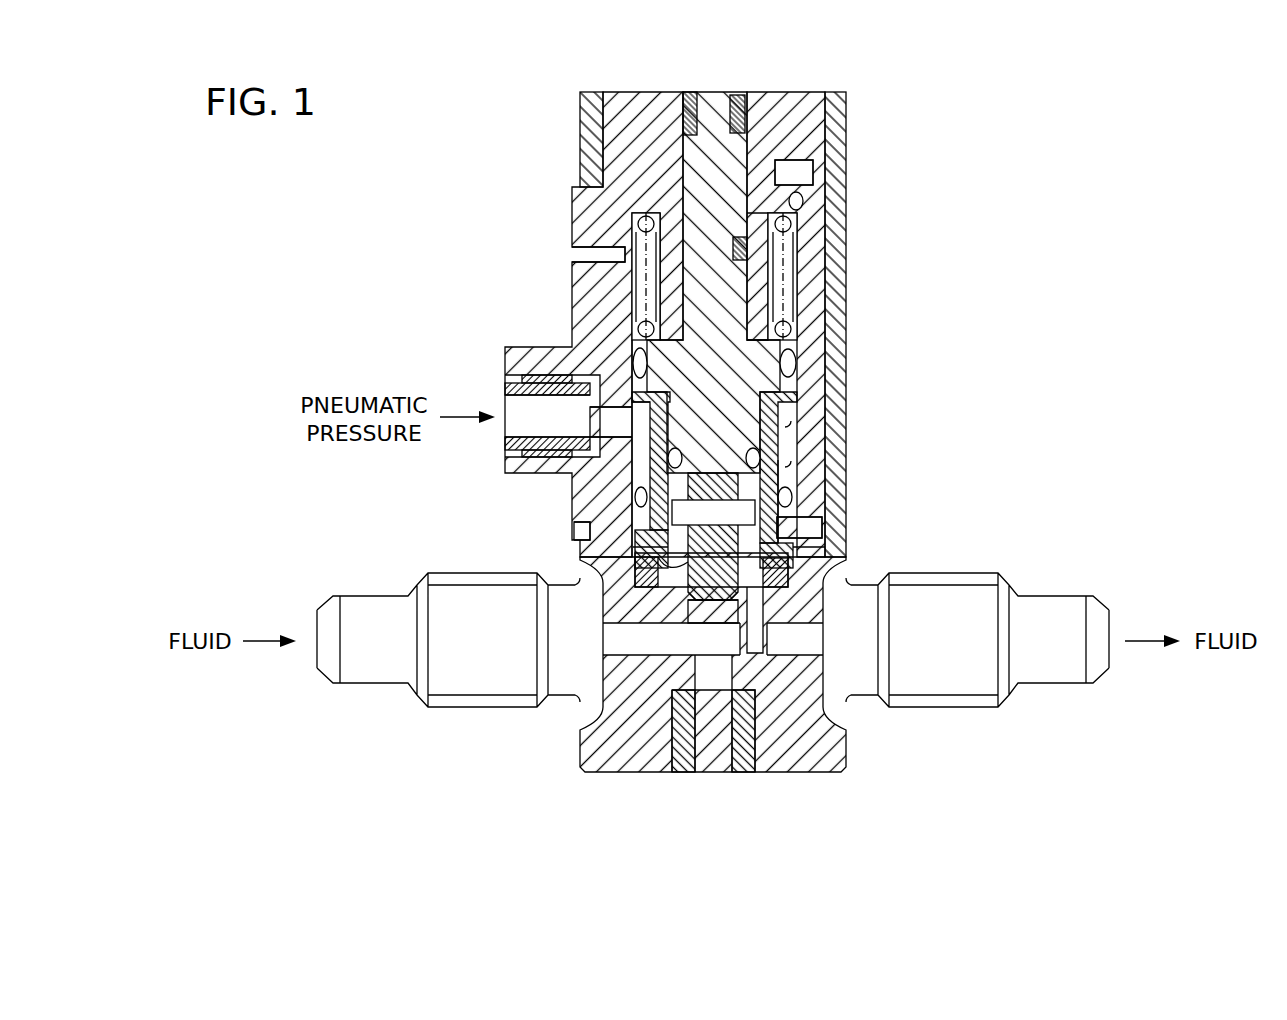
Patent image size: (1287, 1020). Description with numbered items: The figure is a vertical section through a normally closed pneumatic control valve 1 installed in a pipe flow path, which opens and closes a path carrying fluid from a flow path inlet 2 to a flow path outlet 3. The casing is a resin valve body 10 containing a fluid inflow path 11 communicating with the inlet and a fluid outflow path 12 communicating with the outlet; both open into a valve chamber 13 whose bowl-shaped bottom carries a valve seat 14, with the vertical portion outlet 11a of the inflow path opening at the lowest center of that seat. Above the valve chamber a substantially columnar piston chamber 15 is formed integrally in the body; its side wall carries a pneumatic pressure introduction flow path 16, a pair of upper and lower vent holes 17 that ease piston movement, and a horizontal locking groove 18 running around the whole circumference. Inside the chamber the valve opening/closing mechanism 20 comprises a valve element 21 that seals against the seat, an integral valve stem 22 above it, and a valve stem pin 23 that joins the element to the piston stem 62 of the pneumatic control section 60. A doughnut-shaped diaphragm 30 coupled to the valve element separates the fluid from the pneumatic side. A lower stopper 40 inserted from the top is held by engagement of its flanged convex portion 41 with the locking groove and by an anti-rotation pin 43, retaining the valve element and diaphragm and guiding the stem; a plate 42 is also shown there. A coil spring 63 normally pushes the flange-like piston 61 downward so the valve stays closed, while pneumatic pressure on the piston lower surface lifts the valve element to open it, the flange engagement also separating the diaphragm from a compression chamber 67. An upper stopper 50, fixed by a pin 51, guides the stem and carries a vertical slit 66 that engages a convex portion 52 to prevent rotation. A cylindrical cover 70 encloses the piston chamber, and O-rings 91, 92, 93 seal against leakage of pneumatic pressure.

The pneumatic control valve 1 is at (966, 76).
The flow path inlet 2 is at (318, 652).
The flow path outlet 3 is at (1110, 652).
The valve body 10 is at (622, 772).
The fluid inflow path 11 is at (620, 638).
The vertical portion outlet 11a is at (718, 610).
The fluid outflow path 12 is at (815, 638).
The valve chamber 13 is at (752, 580).
The valve seat 14 is at (690, 605).
The piston chamber 15 is at (790, 430).
The pneumatic pressure introduction flow path 16 is at (610, 420).
The vent holes 17 is at (578, 254).
The locking groove 18 is at (792, 468).
The valve opening/closing mechanism 20 is at (732, 597).
The valve element 21 is at (706, 660).
The valve stem 22 is at (735, 478).
The valve stem pin 23 is at (708, 508).
The diaphragm 30 is at (668, 590).
The lower stopper 40 is at (635, 550).
The flanged convex portion 41 is at (640, 466).
The retaining plate 42 is at (820, 548).
The anti-rotation pin 43 is at (815, 527).
The upper stopper 50 is at (785, 100).
The pin 51 is at (812, 172).
The convex portion 52 is at (665, 318).
The pneumatic control section 60 is at (797, 394).
The piston 61 is at (790, 350).
The piston stem 62 is at (728, 275).
The coil spring 63 is at (792, 302).
The vertical slit 66 is at (672, 290).
The compression chamber 67 is at (641, 408).
The cylindrical cover 70 is at (838, 96).
The O-ring 91 is at (800, 200).
The O-ring 92 is at (742, 246).
The O-ring 93 is at (793, 364).